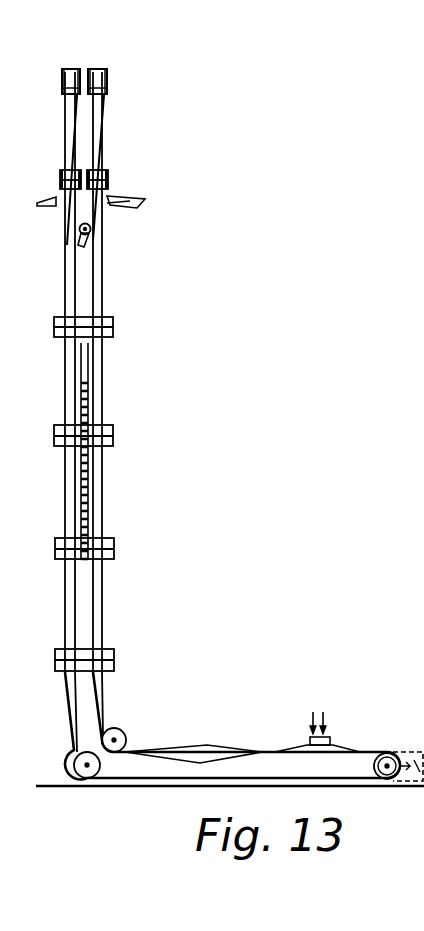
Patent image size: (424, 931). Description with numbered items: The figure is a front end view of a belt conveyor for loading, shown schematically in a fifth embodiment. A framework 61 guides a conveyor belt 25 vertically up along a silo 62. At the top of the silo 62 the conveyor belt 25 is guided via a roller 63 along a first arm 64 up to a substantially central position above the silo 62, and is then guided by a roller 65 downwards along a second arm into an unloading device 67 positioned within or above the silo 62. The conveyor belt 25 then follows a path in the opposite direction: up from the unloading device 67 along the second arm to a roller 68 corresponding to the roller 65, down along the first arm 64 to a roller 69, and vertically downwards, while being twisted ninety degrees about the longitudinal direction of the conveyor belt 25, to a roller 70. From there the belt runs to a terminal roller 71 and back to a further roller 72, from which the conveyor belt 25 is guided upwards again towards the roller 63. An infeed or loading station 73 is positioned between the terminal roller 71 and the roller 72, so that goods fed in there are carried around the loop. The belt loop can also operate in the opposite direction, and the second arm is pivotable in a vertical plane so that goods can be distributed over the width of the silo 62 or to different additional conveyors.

The conveyor belt 25 is at (70, 291).
The framework 61 is at (86, 392).
The silo 62 is at (128, 197).
The roller 63 is at (106, 173).
The first arm 64 is at (82, 124).
The roller 65 is at (106, 75).
The unloading device 67 is at (104, 225).
The roller 68 is at (63, 80).
The roller 69 is at (61, 176).
The roller 70 is at (77, 759).
The terminal roller 71 is at (386, 754).
The further roller 72 is at (121, 731).
The infeed or loading station 73 is at (304, 735).